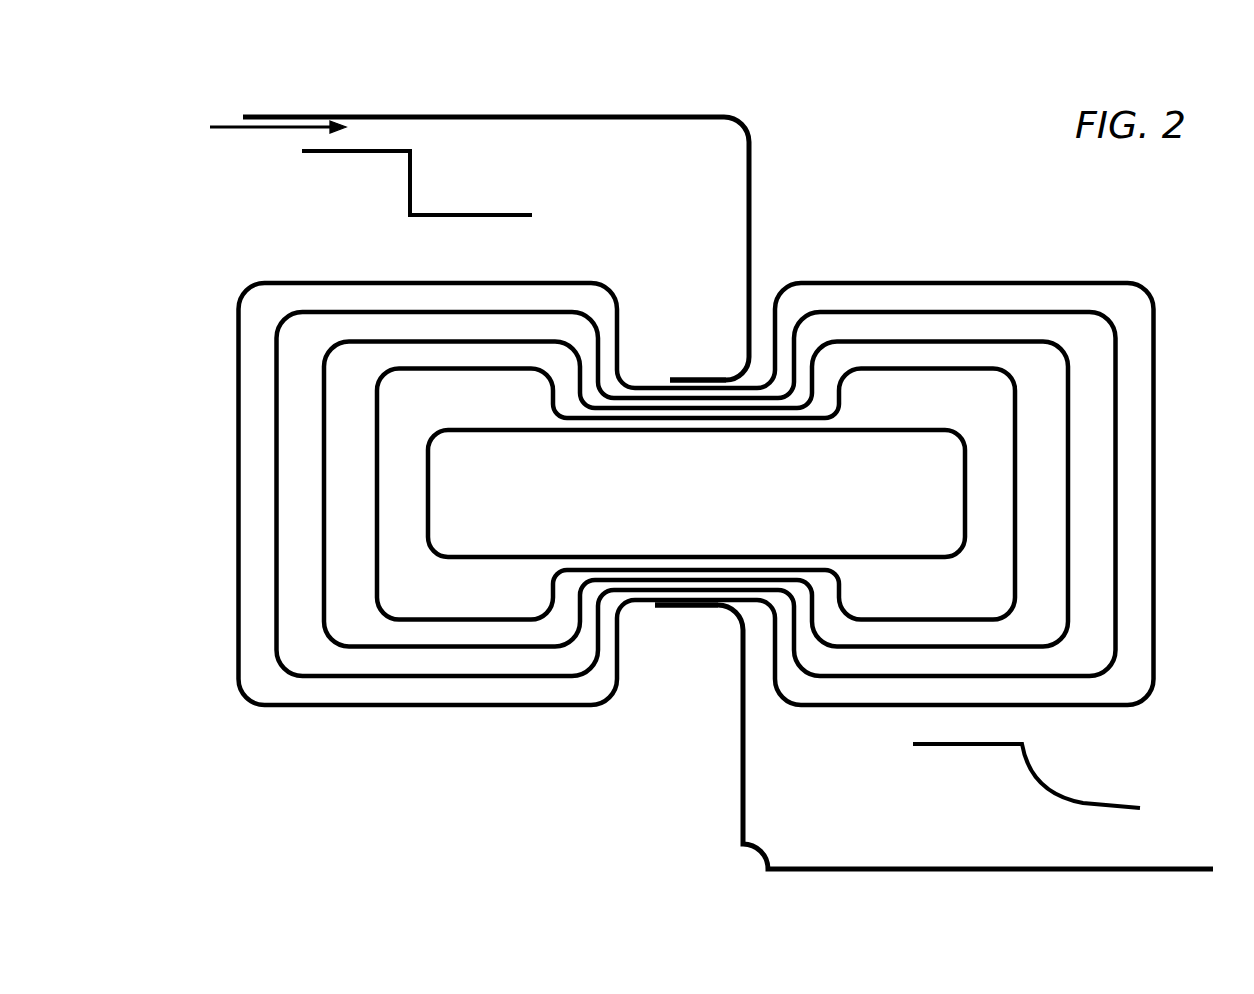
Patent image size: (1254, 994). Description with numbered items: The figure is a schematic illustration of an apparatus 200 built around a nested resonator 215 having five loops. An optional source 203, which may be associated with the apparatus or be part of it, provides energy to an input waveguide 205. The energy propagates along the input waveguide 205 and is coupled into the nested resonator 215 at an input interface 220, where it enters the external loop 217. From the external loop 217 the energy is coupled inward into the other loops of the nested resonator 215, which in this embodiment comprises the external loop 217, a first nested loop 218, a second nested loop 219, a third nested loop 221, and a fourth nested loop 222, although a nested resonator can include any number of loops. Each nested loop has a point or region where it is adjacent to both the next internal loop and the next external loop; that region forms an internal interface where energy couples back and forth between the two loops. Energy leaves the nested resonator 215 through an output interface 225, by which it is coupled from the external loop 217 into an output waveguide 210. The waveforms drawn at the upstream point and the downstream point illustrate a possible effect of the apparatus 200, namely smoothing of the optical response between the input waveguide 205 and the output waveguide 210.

The apparatus 200 is at (915, 223).
The source 203 is at (241, 126).
The input waveguide 205 is at (752, 208).
The output waveguide 210 is at (747, 840).
The nested resonator 215 is at (229, 779).
The external loop 217 is at (297, 708).
The first nested loop 218 is at (367, 675).
The second nested loop 219 is at (418, 648).
The input interface 220 is at (692, 372).
The third nested loop 221 is at (464, 624).
The fourth nested loop 222 is at (512, 560).
The output interface 225 is at (677, 620).